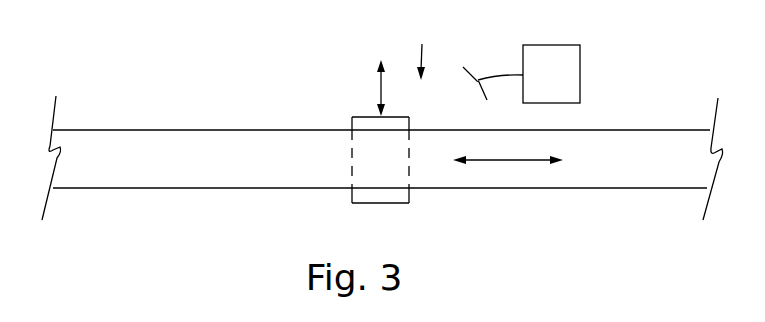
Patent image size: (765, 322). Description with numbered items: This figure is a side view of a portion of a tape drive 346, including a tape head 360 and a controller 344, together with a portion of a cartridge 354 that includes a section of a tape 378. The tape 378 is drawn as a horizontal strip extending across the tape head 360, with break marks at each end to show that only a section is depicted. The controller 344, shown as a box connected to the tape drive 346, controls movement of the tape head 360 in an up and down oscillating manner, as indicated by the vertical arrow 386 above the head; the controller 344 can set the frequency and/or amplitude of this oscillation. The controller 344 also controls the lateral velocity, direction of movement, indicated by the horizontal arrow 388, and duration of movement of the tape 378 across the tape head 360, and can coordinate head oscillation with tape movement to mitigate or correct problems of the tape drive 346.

The controller 344 is at (580, 73).
The tape drive 346 is at (423, 50).
The cartridge 354 is at (211, 208).
The tape head 360 is at (352, 117).
The tape 378 is at (170, 130).
The arrow indicating oscillating movement 386 is at (381, 88).
The arrow indicating direction of tape movement 388 is at (493, 160).